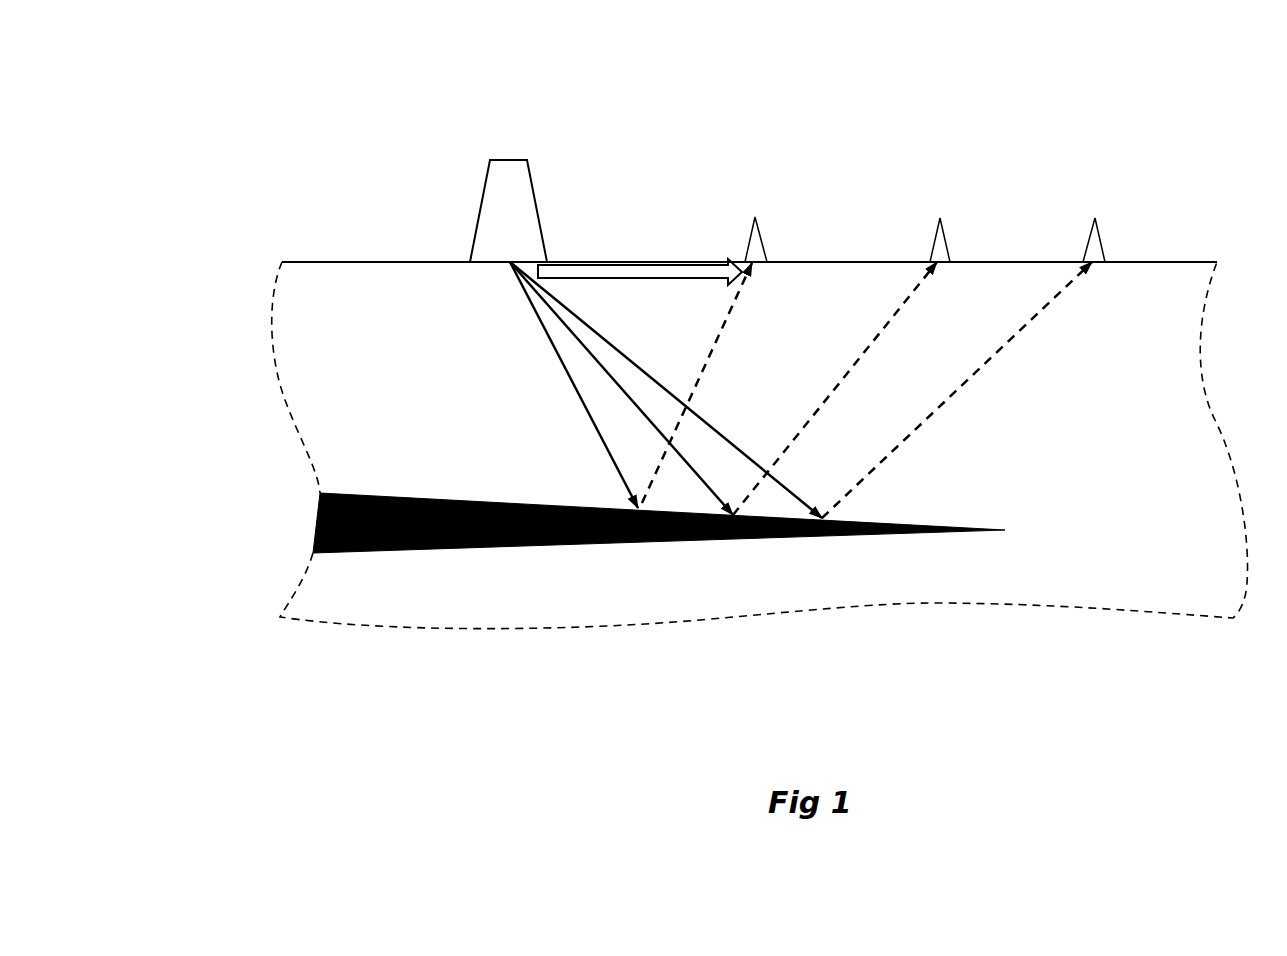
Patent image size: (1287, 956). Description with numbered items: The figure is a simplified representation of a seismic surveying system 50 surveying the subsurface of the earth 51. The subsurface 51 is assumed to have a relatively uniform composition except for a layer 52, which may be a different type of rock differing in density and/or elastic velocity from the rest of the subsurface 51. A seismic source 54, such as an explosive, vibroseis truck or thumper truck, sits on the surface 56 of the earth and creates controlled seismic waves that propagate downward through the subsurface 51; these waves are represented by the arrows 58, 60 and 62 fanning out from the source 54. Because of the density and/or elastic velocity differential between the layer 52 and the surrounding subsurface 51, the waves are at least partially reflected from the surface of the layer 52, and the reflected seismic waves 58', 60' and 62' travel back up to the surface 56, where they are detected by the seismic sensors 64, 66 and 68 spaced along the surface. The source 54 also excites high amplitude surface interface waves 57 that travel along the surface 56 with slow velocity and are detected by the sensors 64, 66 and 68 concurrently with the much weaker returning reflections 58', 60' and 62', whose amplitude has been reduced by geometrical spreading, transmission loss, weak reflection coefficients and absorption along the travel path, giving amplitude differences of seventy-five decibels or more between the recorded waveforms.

The seismic surveying system 50 is at (358, 121).
The subsurface of the earth 51 is at (355, 365).
The layer 52 is at (318, 527).
The seismic source 54 is at (495, 157).
The surface of the earth 56 is at (357, 258).
The surface interface waves 57 is at (650, 268).
The seismic wave 58 is at (559, 385).
The seismic wave 60 is at (600, 388).
The seismic wave 62 is at (666, 390).
The reflected seismic wave 58' is at (745, 383).
The reflected seismic wave 60' is at (879, 388).
The reflected seismic wave 62' is at (957, 390).
The seismic sensor 64 is at (745, 232).
The seismic sensor 66 is at (933, 232).
The seismic sensor 68 is at (1090, 230).